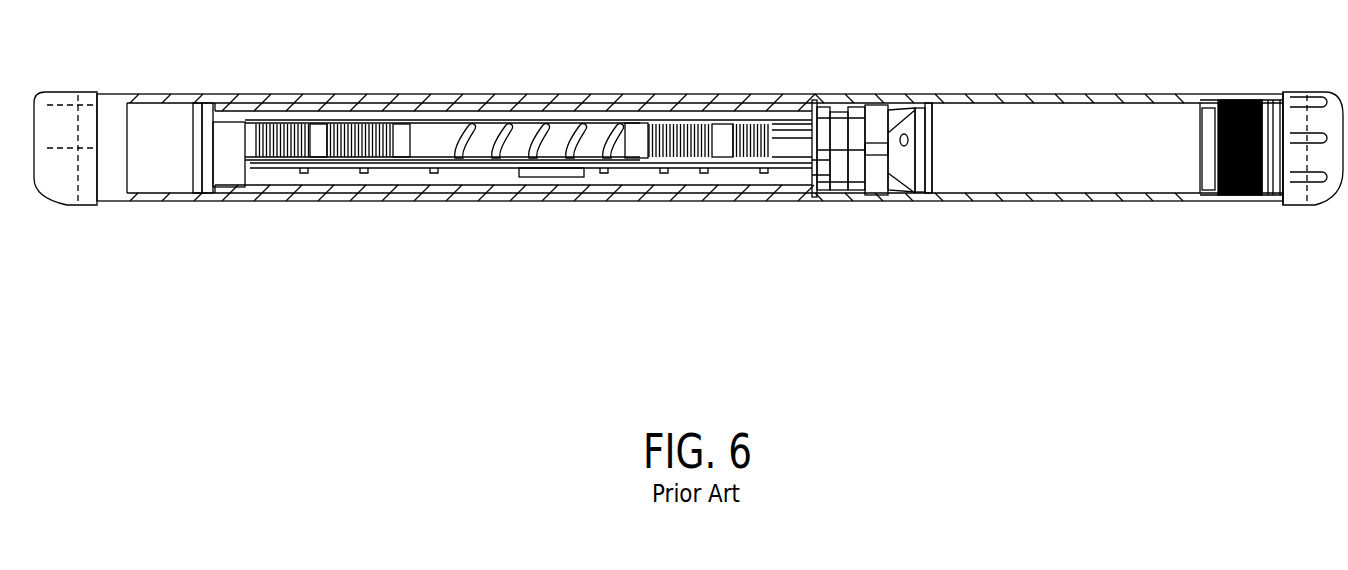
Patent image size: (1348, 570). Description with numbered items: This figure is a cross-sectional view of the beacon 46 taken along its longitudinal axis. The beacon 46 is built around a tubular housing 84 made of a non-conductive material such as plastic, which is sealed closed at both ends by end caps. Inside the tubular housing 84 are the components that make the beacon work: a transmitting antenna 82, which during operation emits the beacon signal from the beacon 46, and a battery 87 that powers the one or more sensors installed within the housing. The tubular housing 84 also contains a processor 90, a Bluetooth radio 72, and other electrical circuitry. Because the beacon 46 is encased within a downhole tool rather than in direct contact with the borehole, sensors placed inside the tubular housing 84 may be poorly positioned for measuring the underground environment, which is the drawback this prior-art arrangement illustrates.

The beacon 46 is at (645, 285).
The Bluetooth radio 72 is at (538, 176).
The transmitting antenna 82 is at (357, 123).
The tubular housing 84 is at (604, 200).
The battery 87 is at (1023, 180).
The processor 90 is at (645, 170).